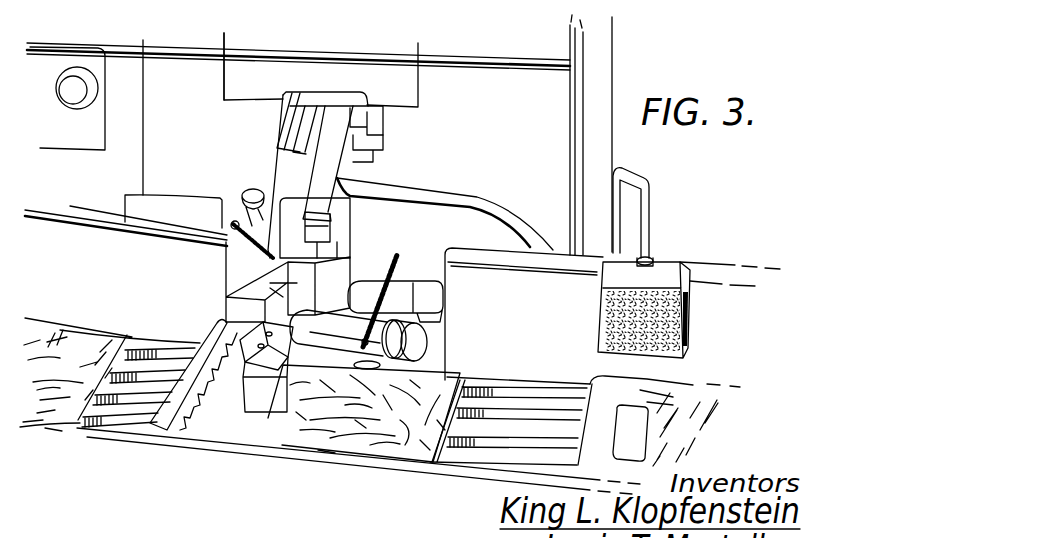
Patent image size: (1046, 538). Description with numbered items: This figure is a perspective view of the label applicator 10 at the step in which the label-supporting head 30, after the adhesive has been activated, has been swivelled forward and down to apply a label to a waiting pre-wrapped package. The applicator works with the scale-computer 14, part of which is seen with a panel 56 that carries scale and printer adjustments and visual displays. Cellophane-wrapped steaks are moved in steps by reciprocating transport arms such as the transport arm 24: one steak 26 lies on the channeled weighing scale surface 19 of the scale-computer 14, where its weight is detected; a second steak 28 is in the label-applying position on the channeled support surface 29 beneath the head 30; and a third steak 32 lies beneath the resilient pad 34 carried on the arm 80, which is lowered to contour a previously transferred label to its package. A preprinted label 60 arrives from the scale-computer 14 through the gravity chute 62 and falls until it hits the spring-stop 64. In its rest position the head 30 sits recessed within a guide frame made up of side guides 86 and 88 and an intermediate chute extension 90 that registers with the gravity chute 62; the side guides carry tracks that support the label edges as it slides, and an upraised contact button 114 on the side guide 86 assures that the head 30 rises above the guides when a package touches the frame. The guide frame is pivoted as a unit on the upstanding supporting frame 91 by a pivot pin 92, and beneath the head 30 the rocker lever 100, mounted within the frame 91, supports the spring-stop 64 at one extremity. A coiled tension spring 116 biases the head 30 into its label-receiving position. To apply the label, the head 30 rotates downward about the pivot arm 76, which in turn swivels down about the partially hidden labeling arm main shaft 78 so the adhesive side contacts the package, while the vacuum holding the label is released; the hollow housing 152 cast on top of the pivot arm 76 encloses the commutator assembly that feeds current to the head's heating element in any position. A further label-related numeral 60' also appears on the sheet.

The label applicator 10 is at (284, 521).
The scale-computer means 14 is at (192, 113).
The channeled weighing scale surface 19 is at (128, 367).
The transport arm 24 is at (157, 420).
The cellophane-wrapped steak 26 is at (72, 343).
The cellophane-wrapped steak 28 is at (390, 440).
The channeled support surface 29 is at (497, 410).
The label-supporting head 30 is at (213, 420).
The cellophane-wrapped steak 32 is at (673, 400).
The resilient patter or pad 34 is at (668, 310).
The panel 56 is at (85, 132).
The preprinted label 60 is at (266, 361).
The block 60' is at (263, 423).
The gravity chute 62 is at (340, 97).
The spring-stop 64 is at (228, 240).
The pivot arm 76 is at (337, 337).
The labeling arm main shaft 78 is at (392, 275).
The arm 80 is at (647, 172).
The side guide 86 is at (263, 137).
The side guide 88 is at (342, 125).
The intermediate chute extension 90 is at (256, 66).
The upstanding supporting frame 91 is at (226, 297).
The pivot pin 92 is at (367, 153).
The rocker lever 100 is at (313, 159).
The upraised contact button 114 is at (257, 190).
The coiled tension spring 116 is at (392, 268).
The hollow housing 152 is at (443, 308).